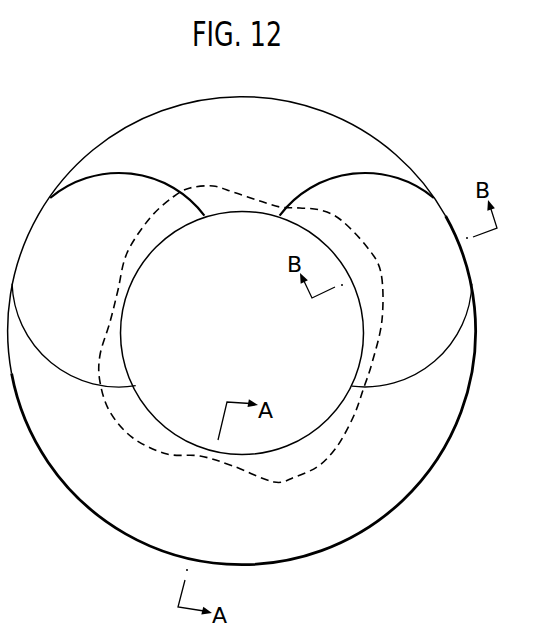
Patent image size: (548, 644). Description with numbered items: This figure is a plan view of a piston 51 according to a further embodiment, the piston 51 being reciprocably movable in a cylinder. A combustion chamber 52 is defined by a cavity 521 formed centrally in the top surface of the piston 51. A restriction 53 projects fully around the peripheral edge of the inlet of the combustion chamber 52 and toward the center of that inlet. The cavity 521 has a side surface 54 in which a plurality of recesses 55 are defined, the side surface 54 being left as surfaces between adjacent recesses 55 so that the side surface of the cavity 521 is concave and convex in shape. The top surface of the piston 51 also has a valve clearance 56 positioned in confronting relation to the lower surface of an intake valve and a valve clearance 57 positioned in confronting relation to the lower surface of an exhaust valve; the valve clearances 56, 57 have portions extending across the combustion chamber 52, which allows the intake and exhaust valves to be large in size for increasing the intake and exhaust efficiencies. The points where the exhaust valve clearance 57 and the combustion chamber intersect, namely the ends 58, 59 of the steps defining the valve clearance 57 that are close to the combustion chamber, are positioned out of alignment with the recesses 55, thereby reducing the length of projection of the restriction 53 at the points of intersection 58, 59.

The piston 51 is at (344, 118).
The combustion chamber 52 is at (256, 342).
The cavity 521 is at (219, 242).
The restriction 53 is at (142, 400).
The side surface 54 is at (198, 458).
The recesses 55 is at (333, 452).
The valve clearance 56 is at (98, 270).
The valve clearance 57 is at (433, 278).
The end of step 58 is at (276, 216).
The end of step 59 is at (352, 387).